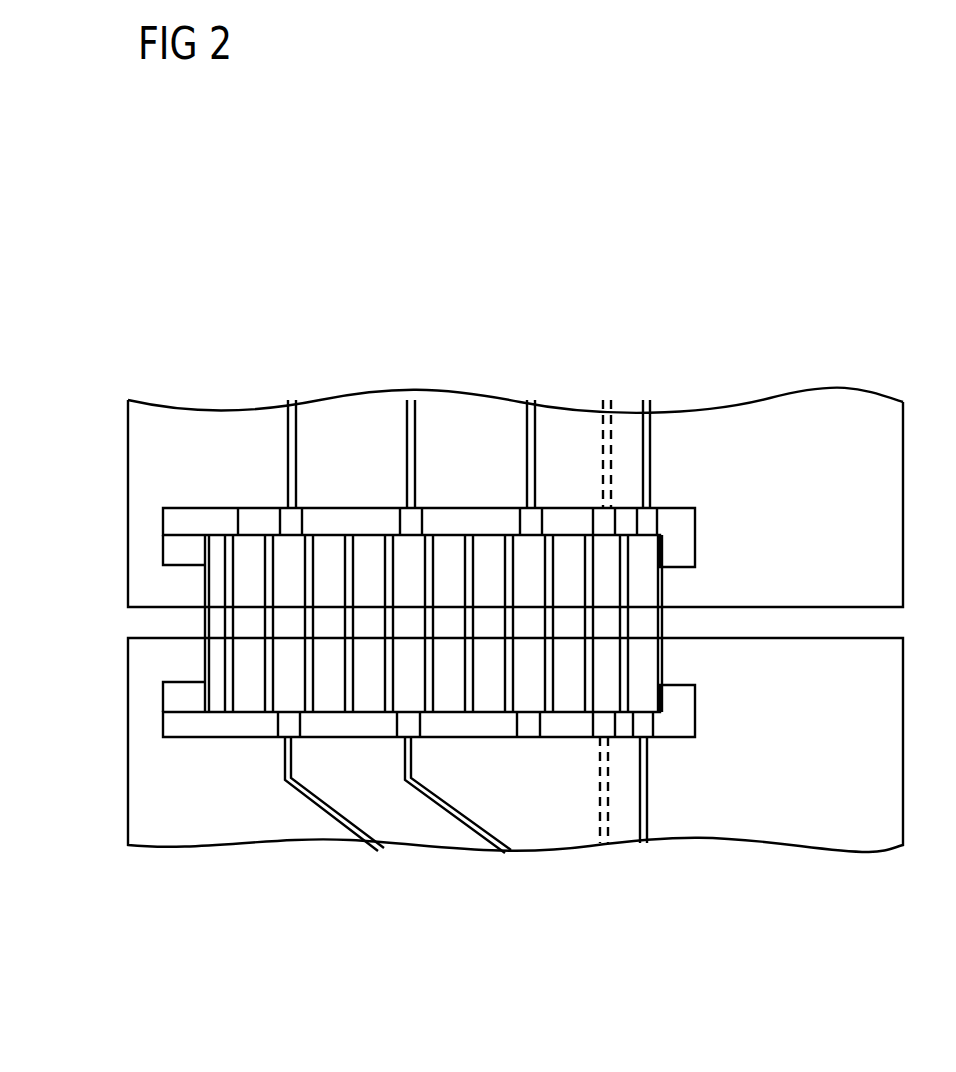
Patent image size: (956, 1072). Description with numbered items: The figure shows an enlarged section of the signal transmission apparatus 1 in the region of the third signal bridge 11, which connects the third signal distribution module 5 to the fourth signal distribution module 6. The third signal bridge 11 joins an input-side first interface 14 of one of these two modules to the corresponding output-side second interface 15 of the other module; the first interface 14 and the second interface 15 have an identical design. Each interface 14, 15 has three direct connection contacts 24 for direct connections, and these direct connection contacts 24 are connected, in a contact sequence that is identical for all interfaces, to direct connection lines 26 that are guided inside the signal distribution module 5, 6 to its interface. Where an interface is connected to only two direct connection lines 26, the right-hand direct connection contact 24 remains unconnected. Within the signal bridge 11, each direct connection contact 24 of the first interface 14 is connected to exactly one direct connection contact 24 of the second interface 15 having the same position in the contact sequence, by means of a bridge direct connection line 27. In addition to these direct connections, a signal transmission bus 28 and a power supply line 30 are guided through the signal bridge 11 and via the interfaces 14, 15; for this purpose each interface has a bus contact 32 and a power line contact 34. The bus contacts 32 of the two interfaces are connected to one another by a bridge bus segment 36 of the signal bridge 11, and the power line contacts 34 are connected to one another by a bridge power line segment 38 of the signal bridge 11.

The signal transmission apparatus 1 is at (208, 362).
The third signal distribution module 5 is at (853, 823).
The fourth signal distribution module 6 is at (857, 415).
The third signal bridge 11 is at (204, 623).
The first interface 14 is at (696, 522).
The second interface 15 is at (696, 724).
The direct connection contact 24 is at (284, 530).
The direct connection line 26 is at (286, 412).
The bridge direct connection line 27 is at (283, 562).
The signal transmission bus 28 is at (610, 838).
The power supply line 30 is at (634, 838).
The bus contact 32 is at (598, 530).
The power line contact 34 is at (648, 526).
The bridge bus segment 36 is at (610, 587).
The bridge power line segment 38 is at (650, 667).